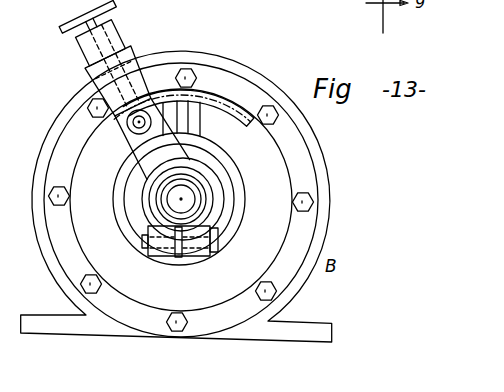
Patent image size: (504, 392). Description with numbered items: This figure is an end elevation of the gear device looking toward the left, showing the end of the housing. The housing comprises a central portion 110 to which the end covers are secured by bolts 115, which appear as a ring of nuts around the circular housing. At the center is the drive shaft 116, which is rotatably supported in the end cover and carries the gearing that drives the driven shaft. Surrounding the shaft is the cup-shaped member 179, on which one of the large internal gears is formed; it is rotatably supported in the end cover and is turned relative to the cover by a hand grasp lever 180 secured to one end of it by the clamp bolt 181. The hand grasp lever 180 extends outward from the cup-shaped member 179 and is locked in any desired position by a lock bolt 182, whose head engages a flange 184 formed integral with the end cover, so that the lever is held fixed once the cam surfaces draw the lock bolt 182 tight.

The central portion 110 is at (322, 159).
The bolts 115 is at (313, 207).
The drive shaft 116 is at (184, 197).
The cup-shaped member 179 is at (200, 202).
The hand grasp lever 180 is at (134, 153).
The clamp bolt 181 is at (216, 240).
The lock bolt 182 is at (131, 131).
The flange 184 is at (228, 107).